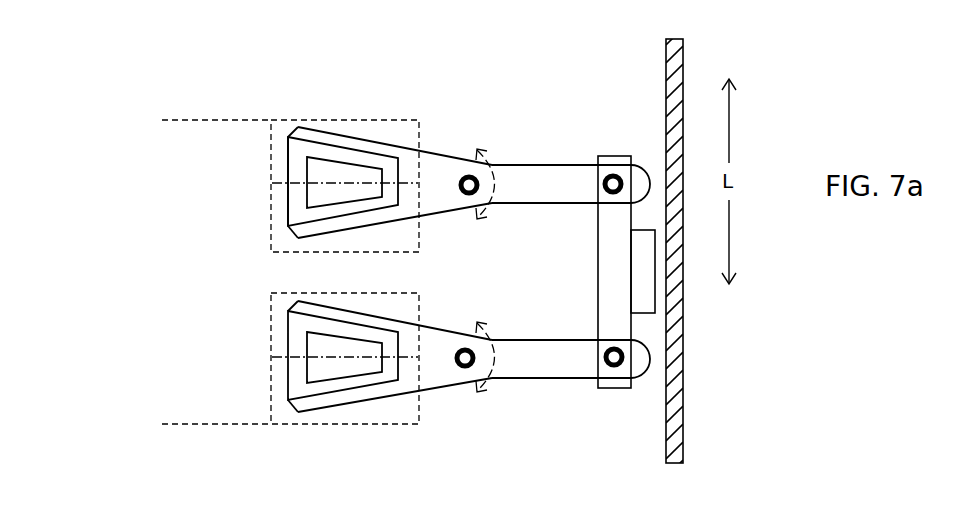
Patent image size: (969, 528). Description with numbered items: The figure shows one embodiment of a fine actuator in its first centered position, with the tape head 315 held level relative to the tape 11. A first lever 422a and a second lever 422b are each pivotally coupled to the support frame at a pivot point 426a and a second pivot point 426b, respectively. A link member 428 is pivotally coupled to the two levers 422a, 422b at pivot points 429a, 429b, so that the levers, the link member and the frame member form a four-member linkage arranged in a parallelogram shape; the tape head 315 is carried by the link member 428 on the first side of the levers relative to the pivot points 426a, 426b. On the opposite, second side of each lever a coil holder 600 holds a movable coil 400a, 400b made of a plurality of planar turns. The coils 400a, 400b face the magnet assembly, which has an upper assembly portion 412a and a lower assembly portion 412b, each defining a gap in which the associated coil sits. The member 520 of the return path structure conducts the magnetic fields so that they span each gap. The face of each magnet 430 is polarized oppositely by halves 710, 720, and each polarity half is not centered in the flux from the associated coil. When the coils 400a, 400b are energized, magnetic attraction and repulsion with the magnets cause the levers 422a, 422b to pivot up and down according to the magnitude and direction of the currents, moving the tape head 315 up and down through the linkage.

The tape 11 is at (683, 245).
The tape head 315 is at (630, 263).
The link member 428 is at (603, 282).
The member of the return path structure 520 is at (215, 120).
The upper assembly portion 412a is at (365, 117).
The lower assembly portion 412b is at (387, 427).
The magnet 430 is at (397, 132).
The coil holder 600 is at (288, 228).
The polarity half 710 is at (275, 140).
The polarity half 720 is at (273, 210).
The movable coil 400a is at (290, 160).
The movable coil 400b is at (295, 388).
The first lever 422a is at (548, 164).
The second lever 422b is at (562, 338).
The pivot point 426a is at (462, 176).
The second pivot point 426b is at (458, 350).
The pivot point 429a is at (613, 173).
The pivot point 429b is at (604, 356).